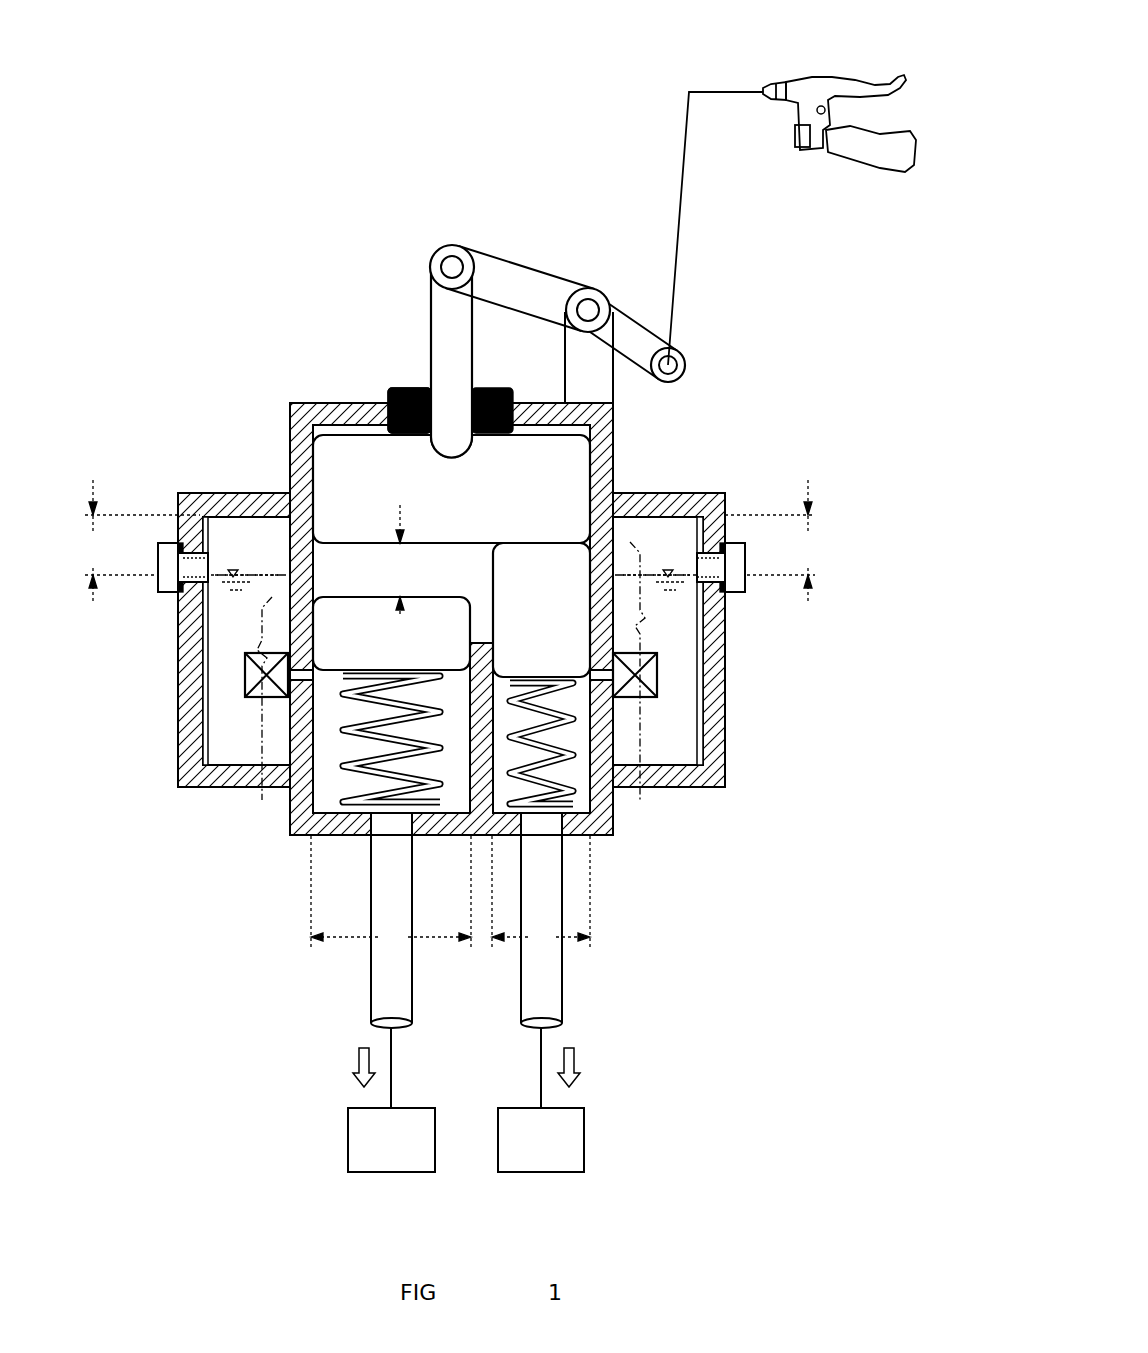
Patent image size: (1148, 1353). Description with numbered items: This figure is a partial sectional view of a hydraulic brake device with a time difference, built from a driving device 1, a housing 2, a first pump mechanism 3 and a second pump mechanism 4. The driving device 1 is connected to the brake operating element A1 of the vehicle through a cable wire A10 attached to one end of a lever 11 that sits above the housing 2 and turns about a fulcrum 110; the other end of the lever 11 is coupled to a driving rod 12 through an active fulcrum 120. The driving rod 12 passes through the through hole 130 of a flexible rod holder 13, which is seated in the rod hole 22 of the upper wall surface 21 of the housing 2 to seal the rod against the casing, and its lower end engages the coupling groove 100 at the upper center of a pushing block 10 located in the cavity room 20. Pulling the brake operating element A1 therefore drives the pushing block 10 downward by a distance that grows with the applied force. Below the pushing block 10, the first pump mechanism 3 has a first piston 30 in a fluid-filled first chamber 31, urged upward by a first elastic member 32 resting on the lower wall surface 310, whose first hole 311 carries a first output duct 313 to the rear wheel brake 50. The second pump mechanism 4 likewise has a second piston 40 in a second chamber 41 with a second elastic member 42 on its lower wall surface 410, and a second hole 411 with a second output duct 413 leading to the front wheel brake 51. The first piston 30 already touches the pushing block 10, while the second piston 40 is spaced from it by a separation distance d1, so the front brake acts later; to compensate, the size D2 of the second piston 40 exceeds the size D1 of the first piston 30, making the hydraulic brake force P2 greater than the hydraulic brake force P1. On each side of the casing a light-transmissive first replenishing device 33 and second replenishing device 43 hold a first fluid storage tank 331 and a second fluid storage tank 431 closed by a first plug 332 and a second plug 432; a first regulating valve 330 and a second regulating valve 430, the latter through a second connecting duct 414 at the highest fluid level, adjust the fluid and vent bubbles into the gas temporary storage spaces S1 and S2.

The driving device 1 is at (547, 270).
The housing 2 is at (618, 437).
The first pump mechanism 3 is at (648, 671).
The second pump mechanism 4 is at (253, 698).
The pushing block 10 is at (333, 473).
The lever 11 is at (535, 290).
The driving rod 12 is at (443, 335).
The rod holder 13 is at (490, 390).
The cavity room 20 is at (313, 421).
The upper wall surface 21 is at (352, 408).
The rod hole 22 is at (502, 411).
The first piston 30 is at (512, 583).
The first chamber 31 is at (580, 797).
The first elastic member 32 is at (540, 700).
The first replenishing device 33 is at (725, 708).
The second piston 40 is at (350, 612).
The second chamber 41 is at (328, 778).
The second elastic member 42 is at (410, 700).
The second replenishing device 43 is at (185, 708).
The rear wheel brake 50 is at (578, 1145).
The front wheel brake 51 is at (355, 1145).
The coupling groove 100 is at (460, 464).
The fulcrum 110 is at (590, 308).
The active fulcrum 120 is at (450, 265).
The through hole 130 is at (428, 392).
The lower wall surface 310 is at (565, 840).
The first hole 311 is at (568, 842).
The first output duct 313 is at (548, 982).
The first regulating valve 330 is at (658, 682).
The first fluid storage tank 331 is at (674, 737).
The first plug 332 is at (735, 590).
The lower wall surface 410 is at (352, 838).
The second hole 411 is at (414, 840).
The second output duct 413 is at (385, 982).
The second connecting duct 414 is at (297, 688).
The second regulating valve 430 is at (250, 682).
The second fluid storage tank 431 is at (225, 737).
The second plug 432 is at (168, 590).
The brake operating element A1 is at (832, 88).
The cable wire A10 is at (682, 230).
The size of first piston D1 is at (541, 893).
The size of second piston D2 is at (391, 893).
The separation distance d1 is at (402, 560).
The gas temporary storage space S1 is at (719, 541).
The gas temporary storage space S2 is at (185, 541).
The hydraulic brake force P1 is at (582, 1058).
The hydraulic brake force P2 is at (356, 1058).